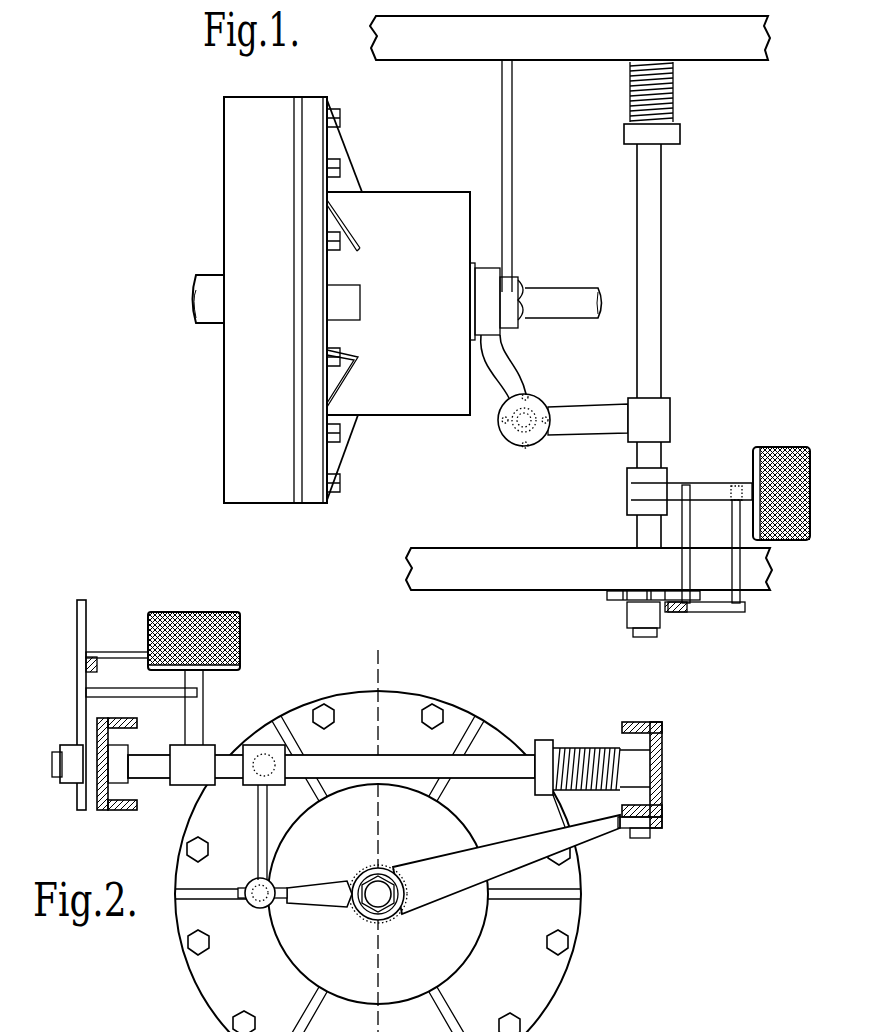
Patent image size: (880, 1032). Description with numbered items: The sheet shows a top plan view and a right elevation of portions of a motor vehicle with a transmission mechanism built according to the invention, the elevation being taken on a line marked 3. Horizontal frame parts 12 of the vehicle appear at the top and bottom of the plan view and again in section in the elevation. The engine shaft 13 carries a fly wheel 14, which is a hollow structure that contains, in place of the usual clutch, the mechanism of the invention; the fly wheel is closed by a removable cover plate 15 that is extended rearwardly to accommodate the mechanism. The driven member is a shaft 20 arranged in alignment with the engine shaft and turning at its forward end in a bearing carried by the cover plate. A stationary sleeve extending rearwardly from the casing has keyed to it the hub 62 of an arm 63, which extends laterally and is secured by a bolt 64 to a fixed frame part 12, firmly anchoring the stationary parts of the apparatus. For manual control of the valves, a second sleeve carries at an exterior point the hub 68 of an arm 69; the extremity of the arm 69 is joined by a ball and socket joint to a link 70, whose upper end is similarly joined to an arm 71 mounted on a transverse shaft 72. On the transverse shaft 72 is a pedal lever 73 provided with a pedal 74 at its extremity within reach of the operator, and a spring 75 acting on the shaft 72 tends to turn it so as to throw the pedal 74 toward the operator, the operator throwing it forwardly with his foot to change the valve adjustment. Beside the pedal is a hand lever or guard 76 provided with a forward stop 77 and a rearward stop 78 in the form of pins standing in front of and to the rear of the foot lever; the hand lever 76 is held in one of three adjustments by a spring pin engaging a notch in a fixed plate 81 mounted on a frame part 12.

In FIG. 2, the section line 3 is at (378, 830).
In FIG. 1, the horizontal frame parts 12 is at (571, 303).
In FIG. 2, the horizontal frame parts 12 is at (398, 776).
In FIG. 1, the engine shaft 13 is at (192, 291).
In FIG. 1, the fly wheel 14 is at (275, 300).
In FIG. 1, the cover plate 15 is at (384, 300).
In FIG. 2, the cover plate 15 is at (378, 861).
In FIG. 1, the shaft 20 is at (563, 303).
In FIG. 2, the shaft 20 is at (380, 897).
In FIG. 1, the hub 62 is at (522, 281).
In FIG. 1, the arm 63 is at (507, 184).
In FIG. 2, the arm 63 is at (506, 854).
In FIG. 2, the bolt 64 is at (694, 846).
In FIG. 1, the hub 68 is at (487, 283).
In FIG. 1, the arm 69 is at (520, 378).
In FIG. 2, the arm 69 is at (324, 893).
In FIG. 2, the link 70 is at (259, 829).
In FIG. 1, the arm 71 is at (597, 424).
In FIG. 2, the arm 71 is at (262, 745).
In FIG. 1, the transverse shaft 72 is at (664, 297).
In FIG. 2, the transverse shaft 72 is at (360, 748).
In FIG. 1, the pedal lever 73 is at (716, 490).
In FIG. 2, the pedal lever 73 is at (204, 716).
In FIG. 1, the pedal 74 is at (798, 433).
In FIG. 2, the pedal 74 is at (241, 633).
In FIG. 1, the spring 75 is at (660, 98).
In FIG. 2, the spring 75 is at (574, 752).
In FIG. 1, the hand lever 76 is at (730, 610).
In FIG. 2, the hand lever 76 is at (78, 671).
In FIG. 1, the forward stop 77 is at (690, 541).
In FIG. 2, the forward stop 77 is at (122, 656).
In FIG. 1, the rearward stop 78 is at (734, 517).
In FIG. 2, the rearward stop 78 is at (141, 684).
In FIG. 1, the fixed plate 81 is at (610, 600).
In FIG. 2, the fixed plate 81 is at (88, 791).